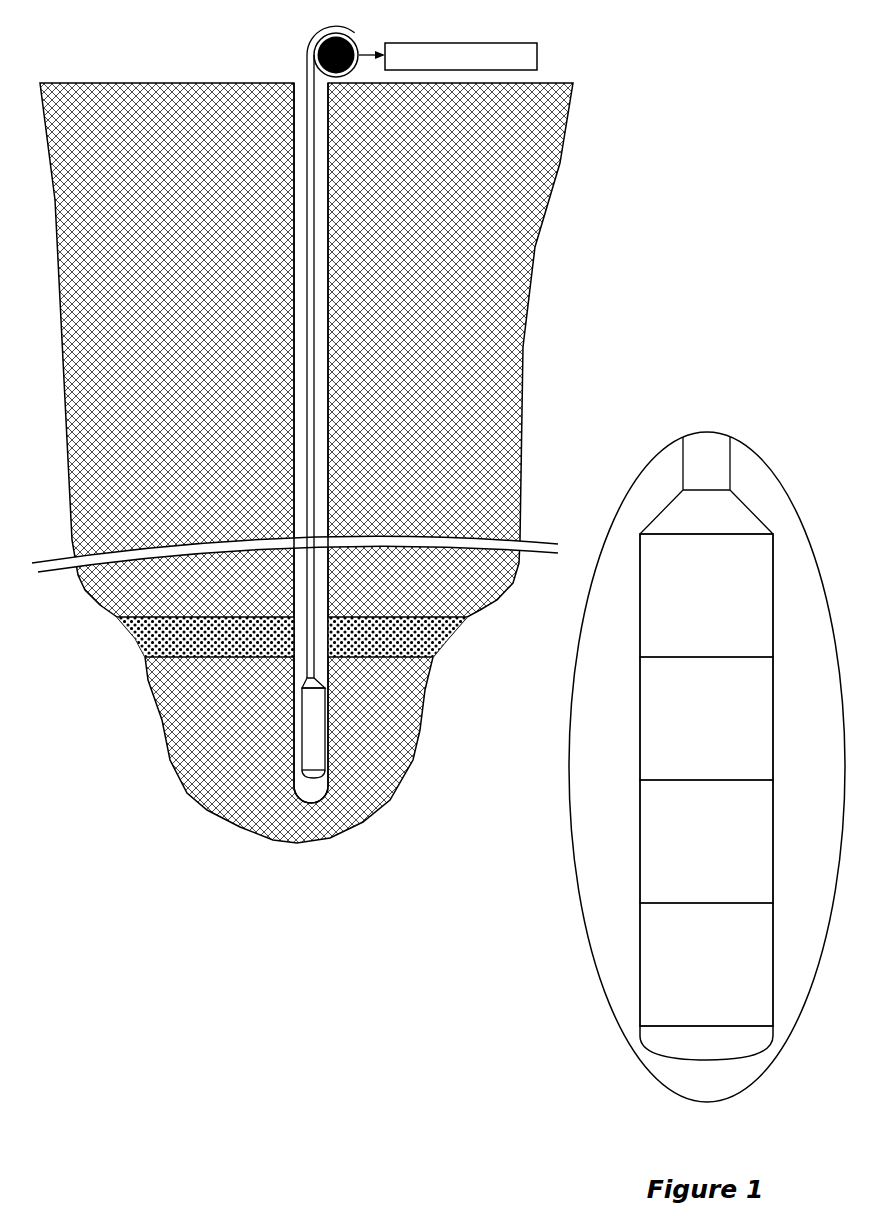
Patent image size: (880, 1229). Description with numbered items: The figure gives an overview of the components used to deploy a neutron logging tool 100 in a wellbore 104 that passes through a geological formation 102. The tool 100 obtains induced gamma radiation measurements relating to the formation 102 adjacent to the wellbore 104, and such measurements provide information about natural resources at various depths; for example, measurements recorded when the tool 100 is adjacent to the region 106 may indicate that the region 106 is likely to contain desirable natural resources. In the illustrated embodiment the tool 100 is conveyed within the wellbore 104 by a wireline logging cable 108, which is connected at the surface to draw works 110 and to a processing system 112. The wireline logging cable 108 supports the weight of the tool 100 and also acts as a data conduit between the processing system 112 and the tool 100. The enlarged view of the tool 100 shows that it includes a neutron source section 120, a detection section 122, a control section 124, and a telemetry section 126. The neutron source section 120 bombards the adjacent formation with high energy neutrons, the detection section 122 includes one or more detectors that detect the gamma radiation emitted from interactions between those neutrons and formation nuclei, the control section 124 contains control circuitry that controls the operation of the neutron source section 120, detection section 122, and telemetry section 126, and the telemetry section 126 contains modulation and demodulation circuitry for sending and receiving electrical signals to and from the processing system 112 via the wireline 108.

The neutron logging tool 100 is at (342, 725).
The geological formation 102 is at (210, 142).
The wellbore 104 is at (298, 78).
The region 106 is at (433, 638).
The wireline logging cable 108 is at (307, 402).
The draw works 110 is at (340, 33).
The processing system 112 is at (520, 43).
The neutron source section 120 is at (706, 964).
The detection section 122 is at (706, 841).
The control section 124 is at (706, 718).
The telemetry section 126 is at (706, 595).